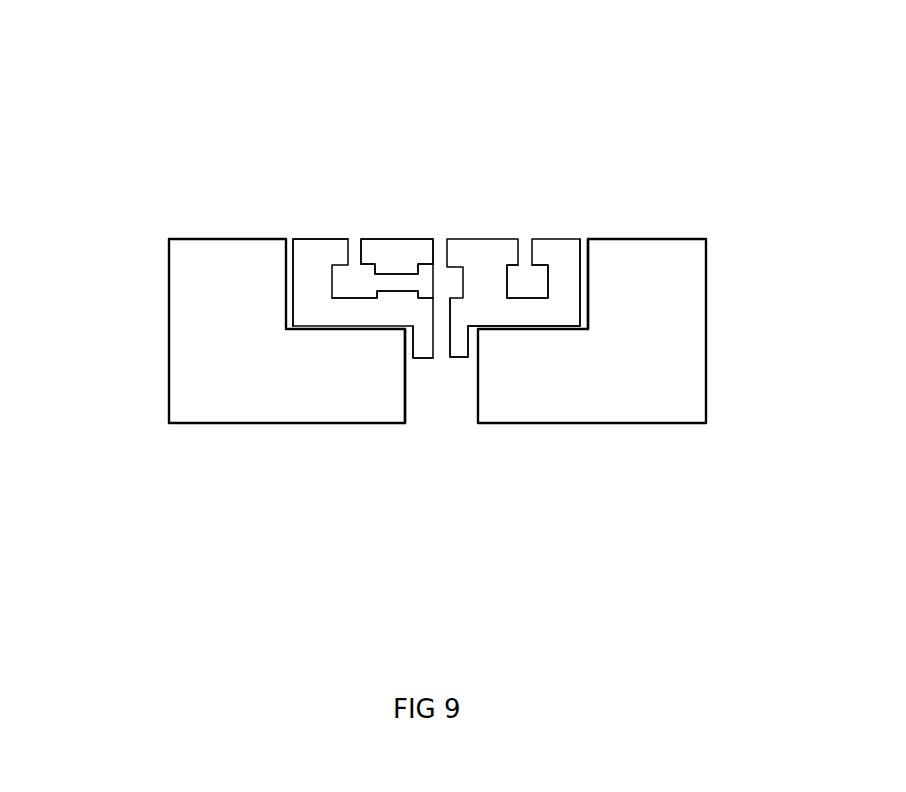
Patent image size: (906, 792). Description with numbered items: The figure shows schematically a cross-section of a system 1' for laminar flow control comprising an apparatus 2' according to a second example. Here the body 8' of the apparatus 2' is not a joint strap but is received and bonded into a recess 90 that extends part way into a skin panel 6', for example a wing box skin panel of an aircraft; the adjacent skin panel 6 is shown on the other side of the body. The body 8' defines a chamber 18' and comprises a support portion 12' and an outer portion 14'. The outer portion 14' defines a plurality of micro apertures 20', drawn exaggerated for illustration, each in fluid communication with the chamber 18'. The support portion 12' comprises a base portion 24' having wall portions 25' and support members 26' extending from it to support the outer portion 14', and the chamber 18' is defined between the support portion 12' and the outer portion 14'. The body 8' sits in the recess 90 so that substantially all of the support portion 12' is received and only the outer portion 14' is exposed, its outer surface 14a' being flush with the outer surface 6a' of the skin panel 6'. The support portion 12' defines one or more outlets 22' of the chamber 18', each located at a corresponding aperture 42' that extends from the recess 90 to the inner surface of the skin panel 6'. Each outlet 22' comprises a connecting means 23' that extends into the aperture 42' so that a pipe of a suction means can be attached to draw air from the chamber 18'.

The system for laminar flow control 1' is at (676, 70).
The apparatus for laminar flow control 2' is at (452, 124).
The skin panel 6' is at (235, 295).
The second panel 6 is at (620, 297).
The outer surface of the skin panel 6a' is at (414, 295).
The body 8' is at (613, 250).
The support portion 12' is at (292, 397).
The outer portion 14' is at (266, 326).
The outer surface of the outer portion 14a' is at (292, 397).
The chamber 18' is at (368, 162).
The micro apertures 20' is at (533, 355).
The outlets 22' is at (490, 437).
The connecting means 23' is at (426, 451).
The base portion 24' is at (305, 439).
The wall portions 25' is at (214, 312).
The support members 26' is at (530, 389).
The apertures 42' is at (393, 419).
The recess 90 is at (580, 328).